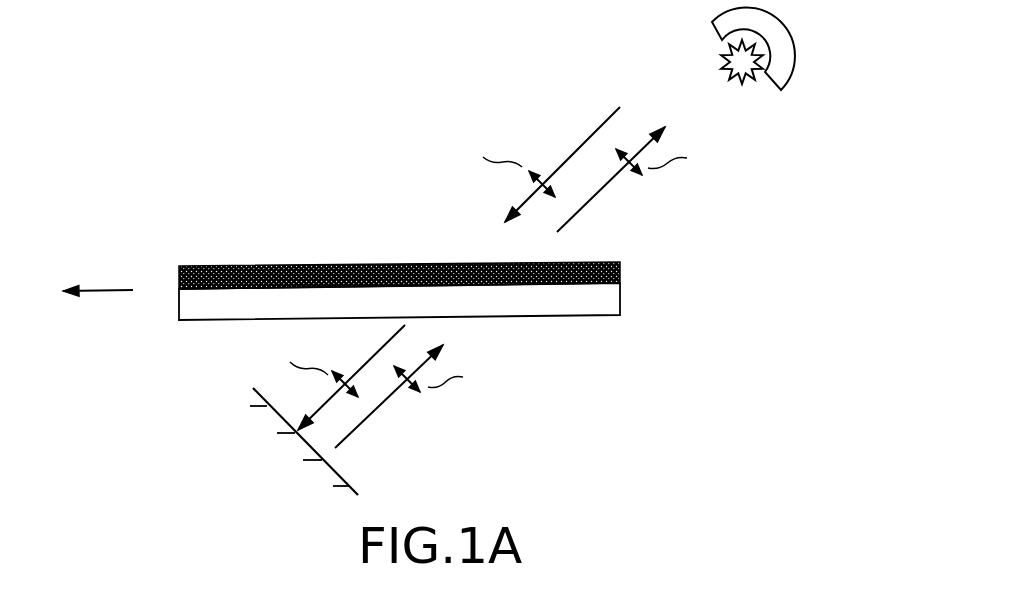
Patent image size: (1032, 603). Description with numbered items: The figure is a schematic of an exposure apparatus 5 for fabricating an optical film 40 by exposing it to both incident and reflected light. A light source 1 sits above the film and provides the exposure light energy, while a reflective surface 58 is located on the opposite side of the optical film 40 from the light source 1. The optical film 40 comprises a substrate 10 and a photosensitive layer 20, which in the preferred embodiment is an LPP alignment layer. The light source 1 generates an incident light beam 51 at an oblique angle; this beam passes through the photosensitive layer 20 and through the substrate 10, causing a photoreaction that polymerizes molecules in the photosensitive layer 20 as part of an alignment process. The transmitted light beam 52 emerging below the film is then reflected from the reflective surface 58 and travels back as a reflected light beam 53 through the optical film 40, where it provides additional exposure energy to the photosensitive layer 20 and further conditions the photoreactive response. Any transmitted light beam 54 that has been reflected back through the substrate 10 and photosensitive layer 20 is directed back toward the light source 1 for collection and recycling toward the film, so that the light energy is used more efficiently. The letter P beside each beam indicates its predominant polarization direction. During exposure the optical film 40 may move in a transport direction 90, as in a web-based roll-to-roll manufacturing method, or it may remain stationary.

The light source 1 is at (810, 65).
The exposure apparatus 5 is at (551, 60).
The substrate 10 is at (638, 298).
The photosensitive layer 20 is at (640, 267).
The optical film 40 is at (481, 271).
The incident light beam 51 is at (630, 103).
The transmitted light beam 52 is at (403, 338).
The reflected light beam 53 is at (445, 358).
The transmitted light beam 54 is at (677, 127).
The reflective surface 58 is at (358, 485).
The transport direction 90 is at (90, 272).